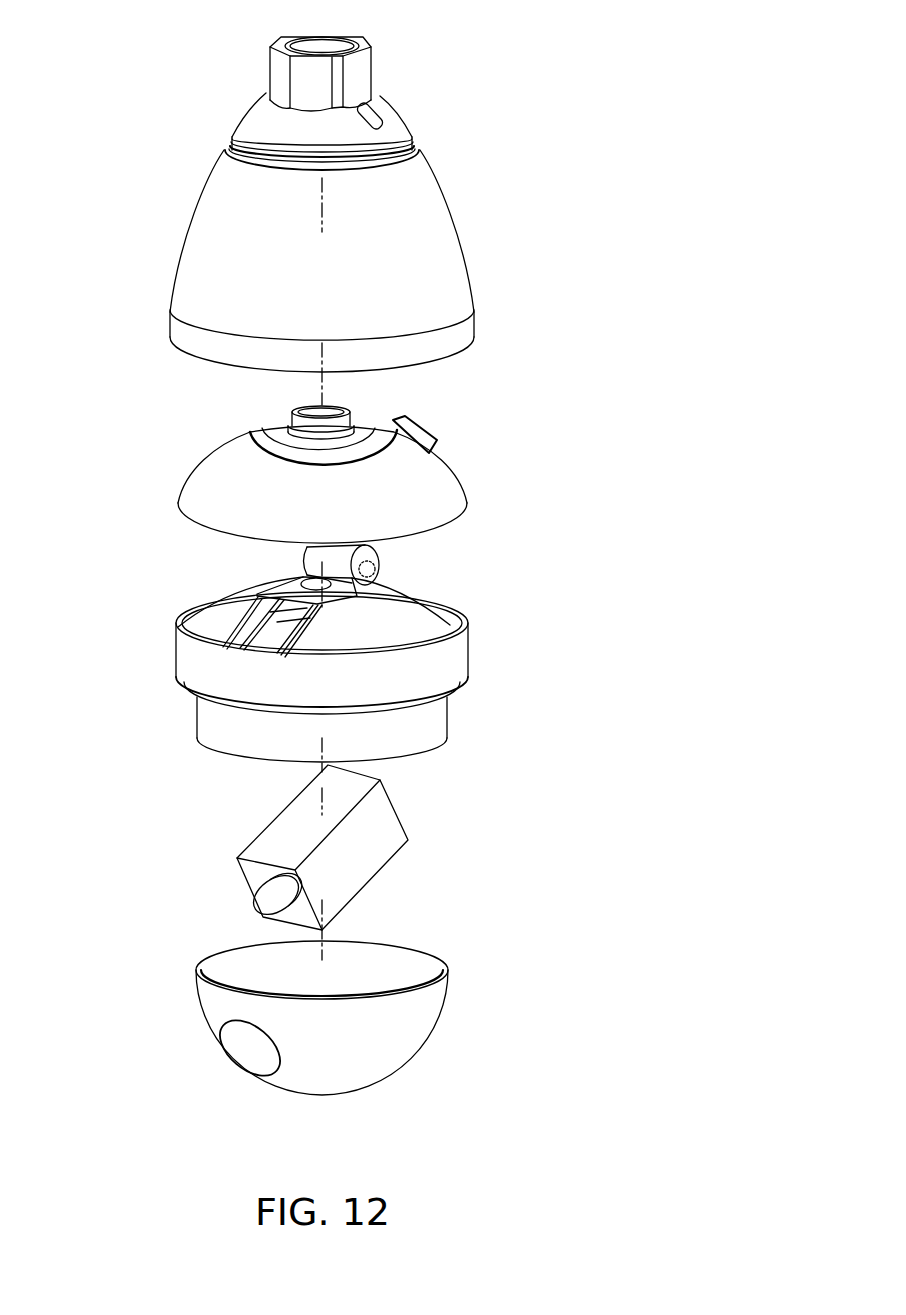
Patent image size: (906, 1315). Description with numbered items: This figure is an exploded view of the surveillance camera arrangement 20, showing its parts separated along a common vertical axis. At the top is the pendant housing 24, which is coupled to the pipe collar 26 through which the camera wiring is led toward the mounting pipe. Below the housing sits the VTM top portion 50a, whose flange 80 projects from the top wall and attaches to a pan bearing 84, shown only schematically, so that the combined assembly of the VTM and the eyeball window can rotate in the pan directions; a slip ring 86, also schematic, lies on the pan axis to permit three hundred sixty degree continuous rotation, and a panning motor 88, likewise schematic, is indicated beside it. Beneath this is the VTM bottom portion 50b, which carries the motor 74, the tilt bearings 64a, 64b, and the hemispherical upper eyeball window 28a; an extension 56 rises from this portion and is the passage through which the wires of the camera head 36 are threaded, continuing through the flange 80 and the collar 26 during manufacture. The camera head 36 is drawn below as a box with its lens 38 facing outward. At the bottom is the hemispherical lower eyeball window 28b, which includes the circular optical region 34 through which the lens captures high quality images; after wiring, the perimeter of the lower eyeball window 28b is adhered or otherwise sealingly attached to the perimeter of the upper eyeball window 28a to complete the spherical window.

The surveillance camera arrangement 20 is at (673, 78).
The pendant housing 24 is at (428, 288).
The pipe collar 26 is at (358, 73).
The upper eyeball window 28a is at (435, 724).
The lower eyeball window 28b is at (410, 1054).
The optical region 34 is at (250, 1050).
The camera head 36 is at (385, 865).
The lens 38 is at (270, 894).
The VTM top portion 50a is at (568, 438).
The VTM bottom portion 50b is at (558, 625).
The extension 56 is at (273, 608).
The tilt bearing 64a is at (185, 628).
The tilt bearing 64b is at (337, 597).
The motor 74 is at (307, 560).
The flange 80 is at (353, 414).
The pan bearing 84 is at (262, 448).
The slip ring 86 is at (270, 428).
The panning motor 88 is at (440, 432).